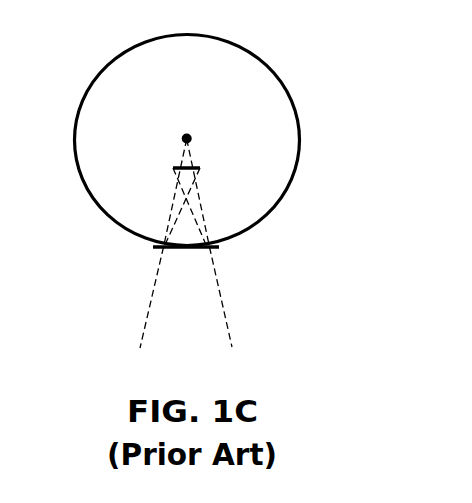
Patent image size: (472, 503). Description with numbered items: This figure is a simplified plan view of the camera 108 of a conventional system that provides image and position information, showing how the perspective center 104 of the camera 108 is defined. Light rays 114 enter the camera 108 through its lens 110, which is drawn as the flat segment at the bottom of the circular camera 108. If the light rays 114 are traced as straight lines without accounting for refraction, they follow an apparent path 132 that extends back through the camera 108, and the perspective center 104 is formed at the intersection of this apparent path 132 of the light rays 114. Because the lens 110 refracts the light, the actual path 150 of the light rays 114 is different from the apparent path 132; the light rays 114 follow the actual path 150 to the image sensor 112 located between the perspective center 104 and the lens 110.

The perspective center 104 is at (182, 138).
The camera 108 is at (267, 63).
The lens 110 is at (170, 249).
The image sensor 112 is at (199, 167).
The light rays 114 is at (147, 327).
The apparent path 132 is at (174, 194).
The actual path 150 is at (200, 212).